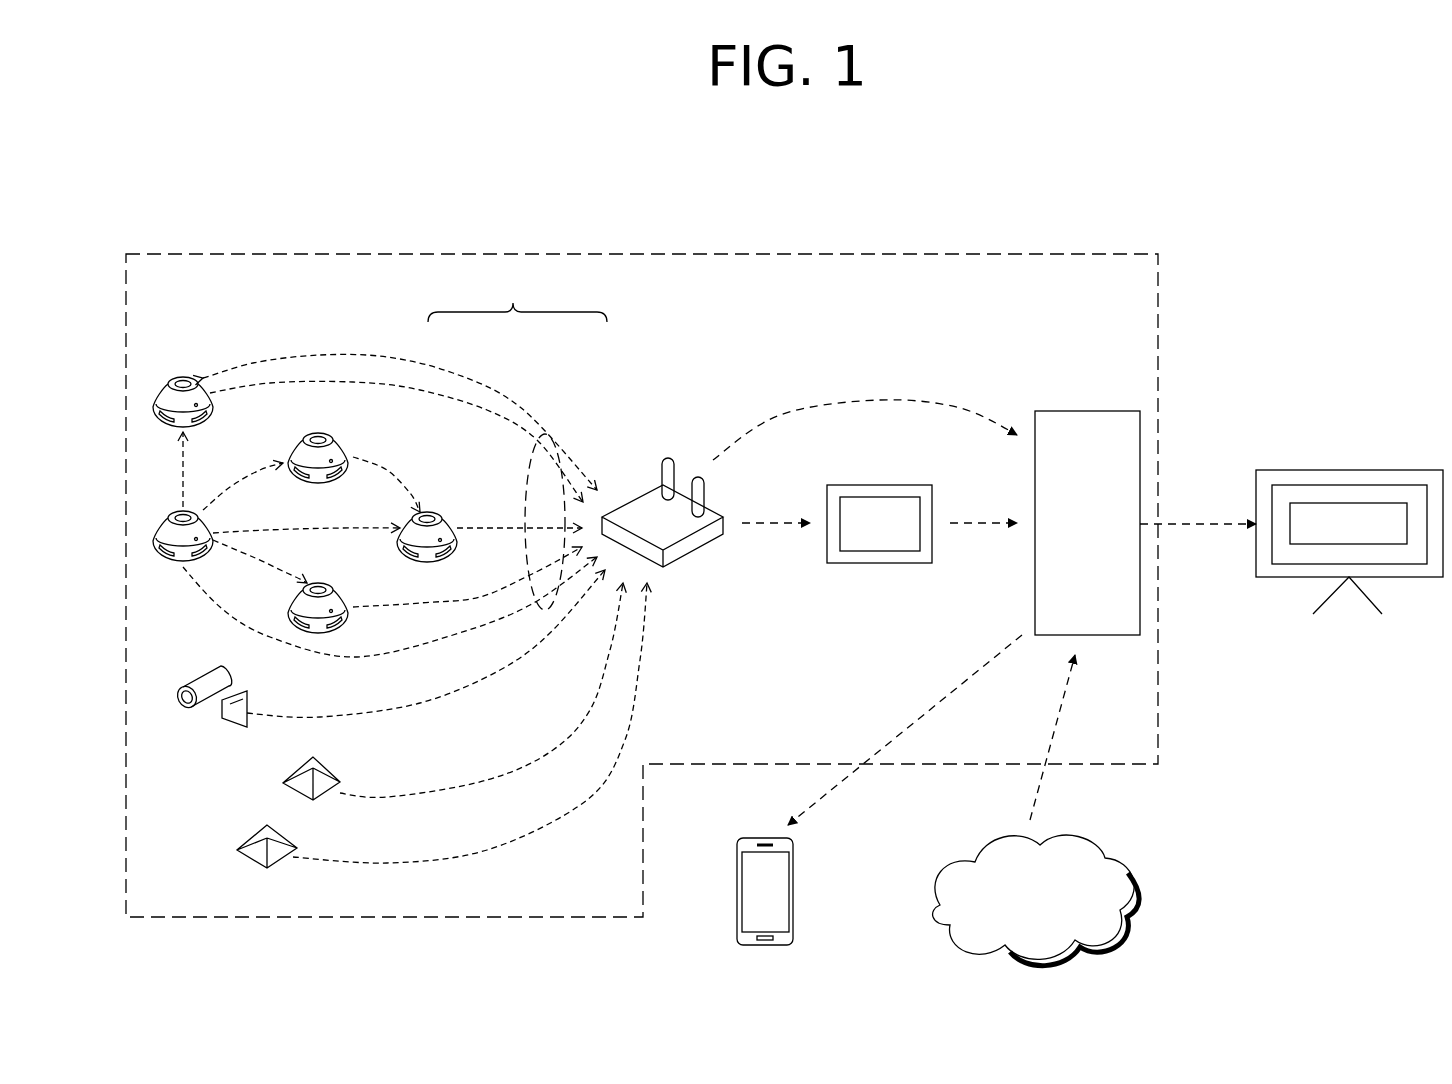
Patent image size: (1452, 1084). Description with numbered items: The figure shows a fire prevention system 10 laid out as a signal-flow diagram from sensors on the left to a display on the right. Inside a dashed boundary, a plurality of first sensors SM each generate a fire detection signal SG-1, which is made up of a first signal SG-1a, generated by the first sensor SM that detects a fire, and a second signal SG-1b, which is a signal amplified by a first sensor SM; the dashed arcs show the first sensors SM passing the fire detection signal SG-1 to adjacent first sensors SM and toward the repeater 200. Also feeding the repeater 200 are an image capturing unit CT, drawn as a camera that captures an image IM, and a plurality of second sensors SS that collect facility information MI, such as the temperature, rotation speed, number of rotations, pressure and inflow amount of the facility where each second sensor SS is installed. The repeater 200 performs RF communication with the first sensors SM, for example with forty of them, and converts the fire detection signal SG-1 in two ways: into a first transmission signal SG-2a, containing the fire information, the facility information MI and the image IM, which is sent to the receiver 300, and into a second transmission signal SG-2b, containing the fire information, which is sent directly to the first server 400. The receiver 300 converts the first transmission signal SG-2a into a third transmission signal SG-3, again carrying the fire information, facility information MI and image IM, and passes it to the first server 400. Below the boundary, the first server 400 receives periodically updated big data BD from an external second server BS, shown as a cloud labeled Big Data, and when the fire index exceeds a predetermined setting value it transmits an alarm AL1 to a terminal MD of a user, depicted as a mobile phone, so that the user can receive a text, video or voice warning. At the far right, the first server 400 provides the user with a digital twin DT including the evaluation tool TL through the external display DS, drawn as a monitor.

The fire prevention system 10 is at (1086, 253).
The first sensor SM is at (182, 373).
The fire detection signal SG-1 is at (517, 297).
The first signal SG-1a is at (543, 433).
The second signal SG-1b is at (385, 467).
The image capturing unit CT is at (203, 670).
The image IM is at (420, 703).
The second sensor SS is at (260, 828).
The facility information MI is at (387, 797).
The repeater 200 is at (697, 552).
The first transmission signal SG-2a is at (772, 527).
The receiver 300 is at (883, 483).
The second transmission signal SG-2b is at (885, 398).
The third transmission signal SG-3 is at (978, 527).
The first server 400 is at (1088, 411).
The evaluation tool TL is at (1184, 530).
The digital twin DT is at (1324, 503).
The external display DS is at (1349, 507).
The alarm AL1 is at (955, 683).
The big data BD is at (1058, 712).
The terminal MD is at (793, 893).
The second server BS is at (1133, 893).